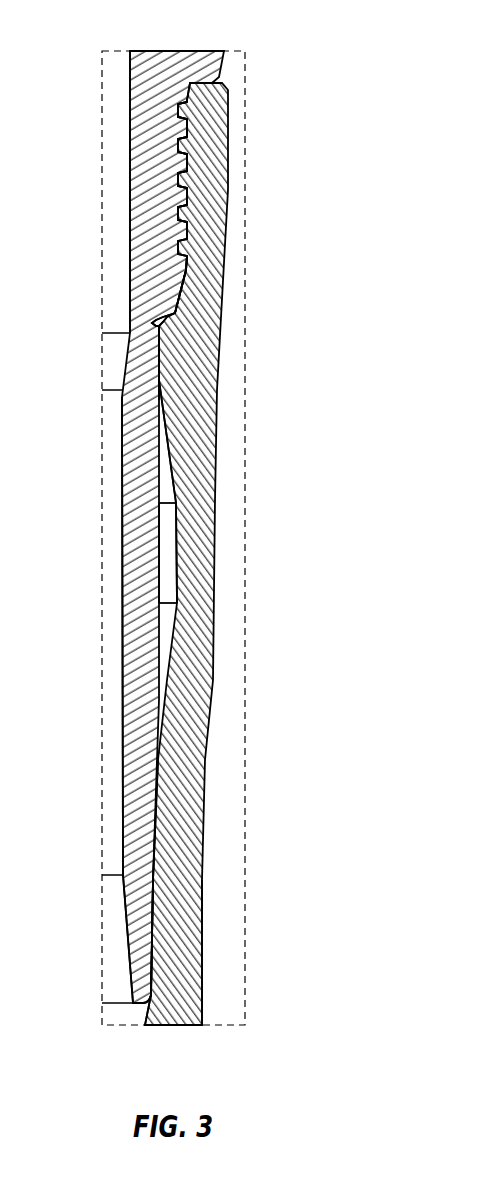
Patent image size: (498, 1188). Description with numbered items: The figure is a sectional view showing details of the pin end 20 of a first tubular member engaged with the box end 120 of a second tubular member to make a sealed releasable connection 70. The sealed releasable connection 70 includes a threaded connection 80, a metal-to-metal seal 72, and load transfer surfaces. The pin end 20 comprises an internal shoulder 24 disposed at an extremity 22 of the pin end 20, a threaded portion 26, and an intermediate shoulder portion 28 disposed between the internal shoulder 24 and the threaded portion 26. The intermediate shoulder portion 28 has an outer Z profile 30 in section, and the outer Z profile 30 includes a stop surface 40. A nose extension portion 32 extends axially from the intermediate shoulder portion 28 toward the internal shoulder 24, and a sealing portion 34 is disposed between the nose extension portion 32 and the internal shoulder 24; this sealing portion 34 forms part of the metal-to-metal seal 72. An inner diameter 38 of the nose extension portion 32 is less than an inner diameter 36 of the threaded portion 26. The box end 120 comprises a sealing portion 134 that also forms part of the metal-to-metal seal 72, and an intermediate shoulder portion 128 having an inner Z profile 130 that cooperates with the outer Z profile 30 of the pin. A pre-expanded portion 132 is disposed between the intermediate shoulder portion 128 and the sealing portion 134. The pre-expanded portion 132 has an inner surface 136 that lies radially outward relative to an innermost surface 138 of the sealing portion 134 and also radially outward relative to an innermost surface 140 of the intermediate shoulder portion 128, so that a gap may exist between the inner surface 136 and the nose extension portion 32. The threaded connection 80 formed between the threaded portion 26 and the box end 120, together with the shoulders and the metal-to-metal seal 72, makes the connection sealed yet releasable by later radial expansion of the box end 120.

The pin end 20 is at (160, 63).
The extremity 22 is at (139, 1007).
The internal shoulder 24 is at (143, 1008).
The threaded portion 26 is at (174, 125).
The intermediate shoulder portion 28 is at (147, 316).
The outer Z profile 30 is at (176, 294).
The nose extension portion 32 is at (118, 533).
The sealing portion 34 is at (155, 943).
The inner diameter of the threaded portion 36 is at (128, 160).
The inner diameter of the nose extension portion 38 is at (120, 470).
The stop surface 40 is at (181, 346).
The sealed releasable connection 70 is at (226, 302).
The metal-to-metal seal 72 is at (145, 925).
The threaded connection 80 is at (176, 212).
The box end 120 is at (180, 1013).
The intermediate shoulder portion 128 is at (173, 320).
The inner Z profile 130 is at (178, 299).
The pre-expanded portion 132 is at (192, 517).
The sealing portion 134 is at (150, 963).
The inner surface 136 is at (178, 585).
The innermost surface 138 is at (160, 963).
The innermost surface 140 is at (156, 368).